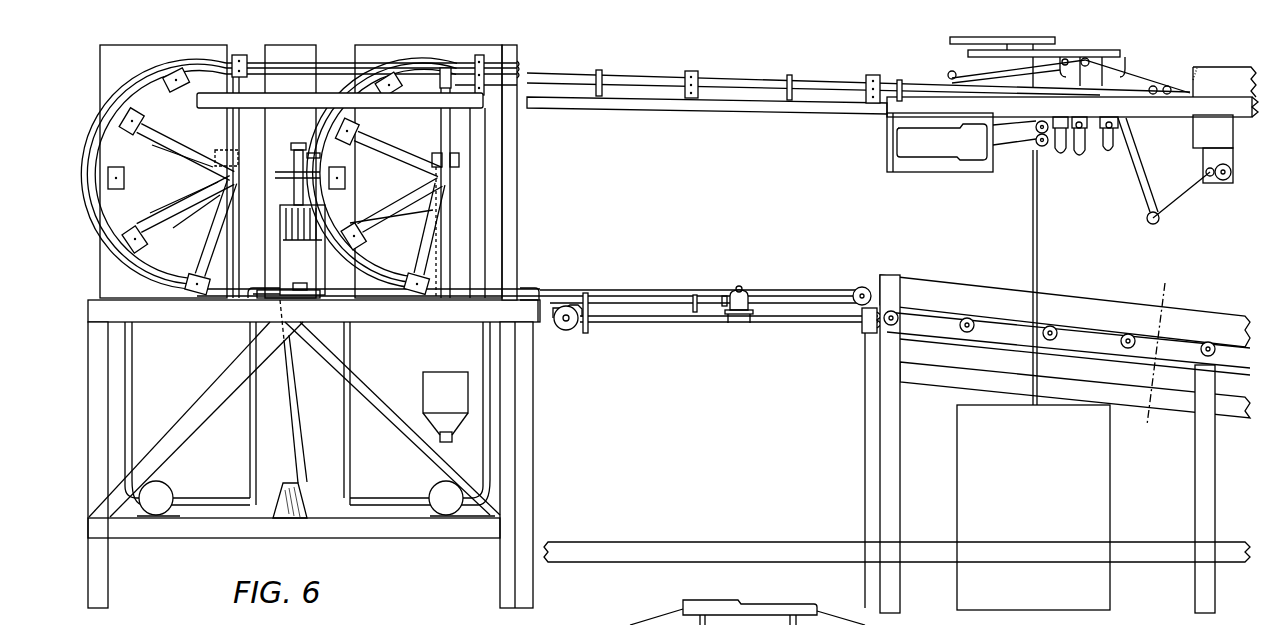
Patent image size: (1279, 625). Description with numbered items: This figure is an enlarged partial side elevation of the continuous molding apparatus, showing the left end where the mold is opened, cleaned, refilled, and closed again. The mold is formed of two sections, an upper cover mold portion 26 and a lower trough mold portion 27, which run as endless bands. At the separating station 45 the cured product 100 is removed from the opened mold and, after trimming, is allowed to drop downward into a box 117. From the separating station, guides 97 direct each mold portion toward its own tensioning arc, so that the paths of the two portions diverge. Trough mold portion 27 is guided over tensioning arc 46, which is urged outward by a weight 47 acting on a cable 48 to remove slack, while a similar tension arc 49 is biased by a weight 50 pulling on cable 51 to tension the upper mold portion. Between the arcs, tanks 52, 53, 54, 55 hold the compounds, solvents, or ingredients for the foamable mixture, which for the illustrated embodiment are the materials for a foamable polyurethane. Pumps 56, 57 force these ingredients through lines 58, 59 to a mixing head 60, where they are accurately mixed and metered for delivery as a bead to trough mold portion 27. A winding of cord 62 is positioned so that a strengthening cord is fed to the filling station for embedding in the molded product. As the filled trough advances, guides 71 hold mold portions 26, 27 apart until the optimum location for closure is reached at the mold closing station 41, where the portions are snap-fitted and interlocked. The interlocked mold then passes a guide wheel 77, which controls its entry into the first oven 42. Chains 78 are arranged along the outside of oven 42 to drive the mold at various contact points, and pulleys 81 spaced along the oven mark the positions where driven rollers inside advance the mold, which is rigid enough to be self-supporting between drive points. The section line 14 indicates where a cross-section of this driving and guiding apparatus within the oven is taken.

The section line 14— 14 is at (1193, 283).
The mold portion 26 is at (398, 79).
The mold portion 27 is at (148, 99).
The mold closing station 41 is at (746, 291).
The first oven 42 is at (1085, 297).
The separating station 45 is at (1142, 70).
The tensioning arc 46 is at (155, 137).
The weight 47 is at (239, 159).
The cable 48 is at (181, 193).
The tension arc 49 is at (370, 143).
The weight 50 is at (433, 156).
The cable 51 is at (397, 110).
The tank 52 is at (108, 74).
The tank 53 is at (280, 87).
The tank 54 is at (383, 193).
The tank 55 is at (435, 403).
The pump 56 is at (166, 484).
The pump 57 is at (431, 487).
The line 58 is at (257, 421).
The line 59 is at (351, 421).
The mixing head 60 is at (300, 283).
The cord 62 is at (301, 505).
The guides 71 is at (584, 300).
The guide wheel 77 is at (863, 287).
The chains 78 is at (1010, 322).
The pulleys 81 is at (903, 326).
The guides 97 is at (598, 72).
The cured product 100 is at (1038, 207).
The box 117 is at (1016, 471).